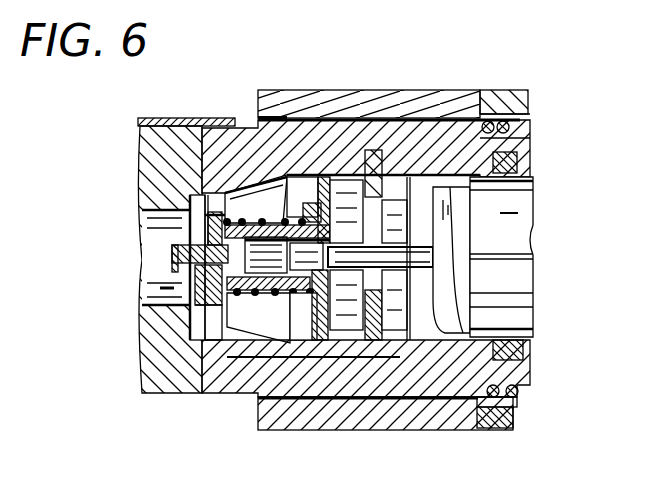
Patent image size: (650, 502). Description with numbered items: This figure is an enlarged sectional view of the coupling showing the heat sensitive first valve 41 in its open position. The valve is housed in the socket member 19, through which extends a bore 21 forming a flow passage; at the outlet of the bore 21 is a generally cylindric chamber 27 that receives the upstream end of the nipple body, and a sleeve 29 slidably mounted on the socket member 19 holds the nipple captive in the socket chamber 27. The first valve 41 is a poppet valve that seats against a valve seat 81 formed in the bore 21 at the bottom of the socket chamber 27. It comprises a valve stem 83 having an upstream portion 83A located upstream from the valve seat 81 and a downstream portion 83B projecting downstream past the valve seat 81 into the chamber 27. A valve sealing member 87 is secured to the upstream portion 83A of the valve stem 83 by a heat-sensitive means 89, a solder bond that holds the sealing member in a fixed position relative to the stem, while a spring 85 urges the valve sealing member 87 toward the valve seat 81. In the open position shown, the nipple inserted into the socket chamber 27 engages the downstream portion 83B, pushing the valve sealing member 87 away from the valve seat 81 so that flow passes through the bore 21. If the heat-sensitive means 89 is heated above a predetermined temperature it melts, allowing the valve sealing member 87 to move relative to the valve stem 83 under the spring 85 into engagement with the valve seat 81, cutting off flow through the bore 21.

The socket member 19 is at (313, 377).
The bore 21 is at (160, 289).
The chamber 27 is at (497, 154).
The sleeve 29 is at (440, 433).
The first valve 41 is at (323, 140).
The valve seat 81 is at (375, 152).
The valve stem 83 is at (230, 340).
The upstream portion 83A is at (270, 185).
The downstream portion 83B is at (433, 275).
The spring 85 is at (203, 160).
The valve sealing member 87 is at (190, 355).
The heat-sensitive means 89 is at (248, 378).